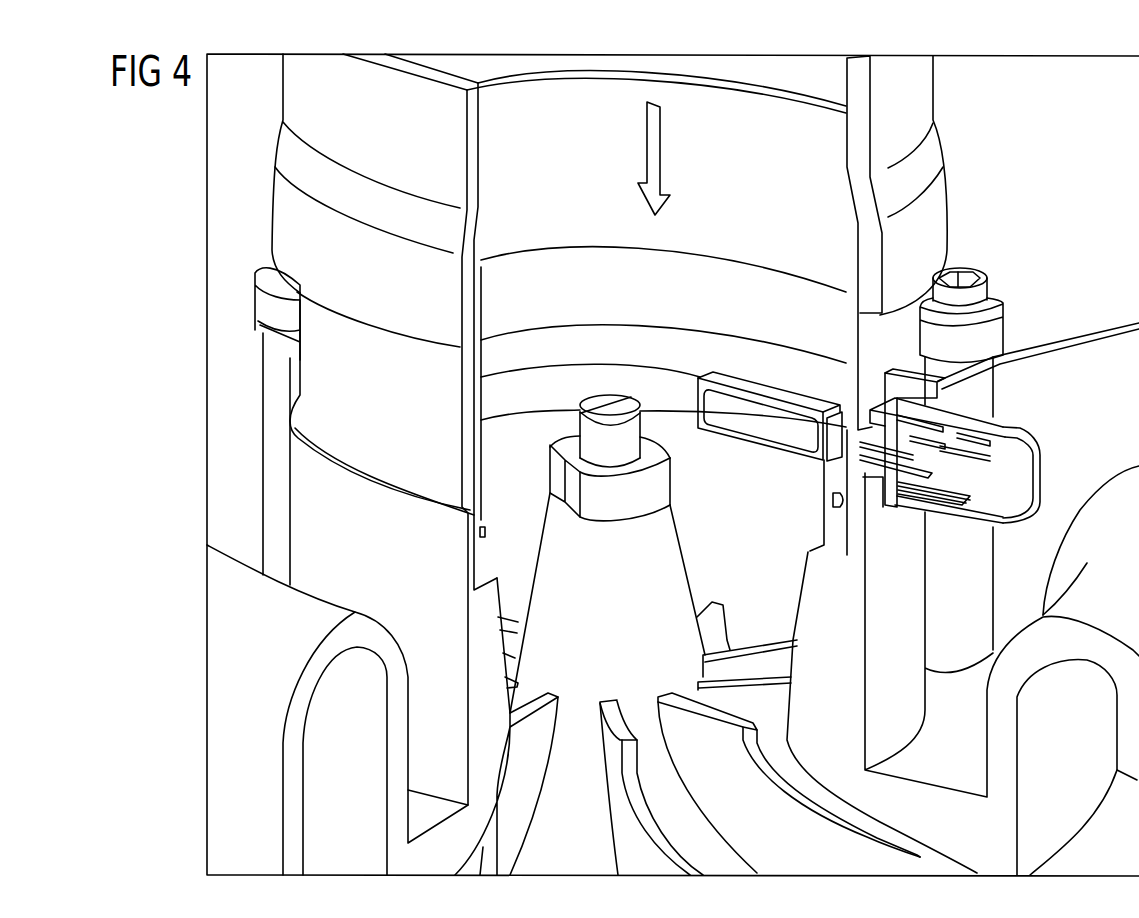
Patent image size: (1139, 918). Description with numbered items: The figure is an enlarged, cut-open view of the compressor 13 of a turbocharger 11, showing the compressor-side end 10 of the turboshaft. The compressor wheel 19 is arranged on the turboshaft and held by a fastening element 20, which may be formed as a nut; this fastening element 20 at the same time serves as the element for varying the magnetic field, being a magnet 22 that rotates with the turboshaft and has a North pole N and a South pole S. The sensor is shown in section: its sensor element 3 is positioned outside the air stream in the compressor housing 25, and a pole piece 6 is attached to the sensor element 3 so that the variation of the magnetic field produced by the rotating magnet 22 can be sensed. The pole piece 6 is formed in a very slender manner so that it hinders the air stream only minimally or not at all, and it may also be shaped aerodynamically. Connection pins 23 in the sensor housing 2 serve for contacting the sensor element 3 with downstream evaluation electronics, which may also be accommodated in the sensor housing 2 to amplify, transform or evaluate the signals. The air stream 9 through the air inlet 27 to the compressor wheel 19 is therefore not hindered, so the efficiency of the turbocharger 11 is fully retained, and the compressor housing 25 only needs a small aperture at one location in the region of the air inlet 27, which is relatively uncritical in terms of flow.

The sensor housing 2 is at (1003, 422).
The sensor element 3 is at (833, 456).
The pole piece 6 is at (752, 423).
The air stream 9 is at (660, 148).
The end of the turboshaft 10 is at (607, 395).
The turbocharger 11 is at (986, 180).
The compressor 13 is at (1020, 262).
The compressor wheel 19 is at (608, 700).
The fastening element 20 is at (622, 503).
The magnet 22 is at (593, 502).
The connection pins 23 is at (936, 468).
The compressor housing 25 is at (297, 607).
The air inlet 27 is at (590, 183).
The South pole S is at (550, 478).
The North pole N is at (655, 500).